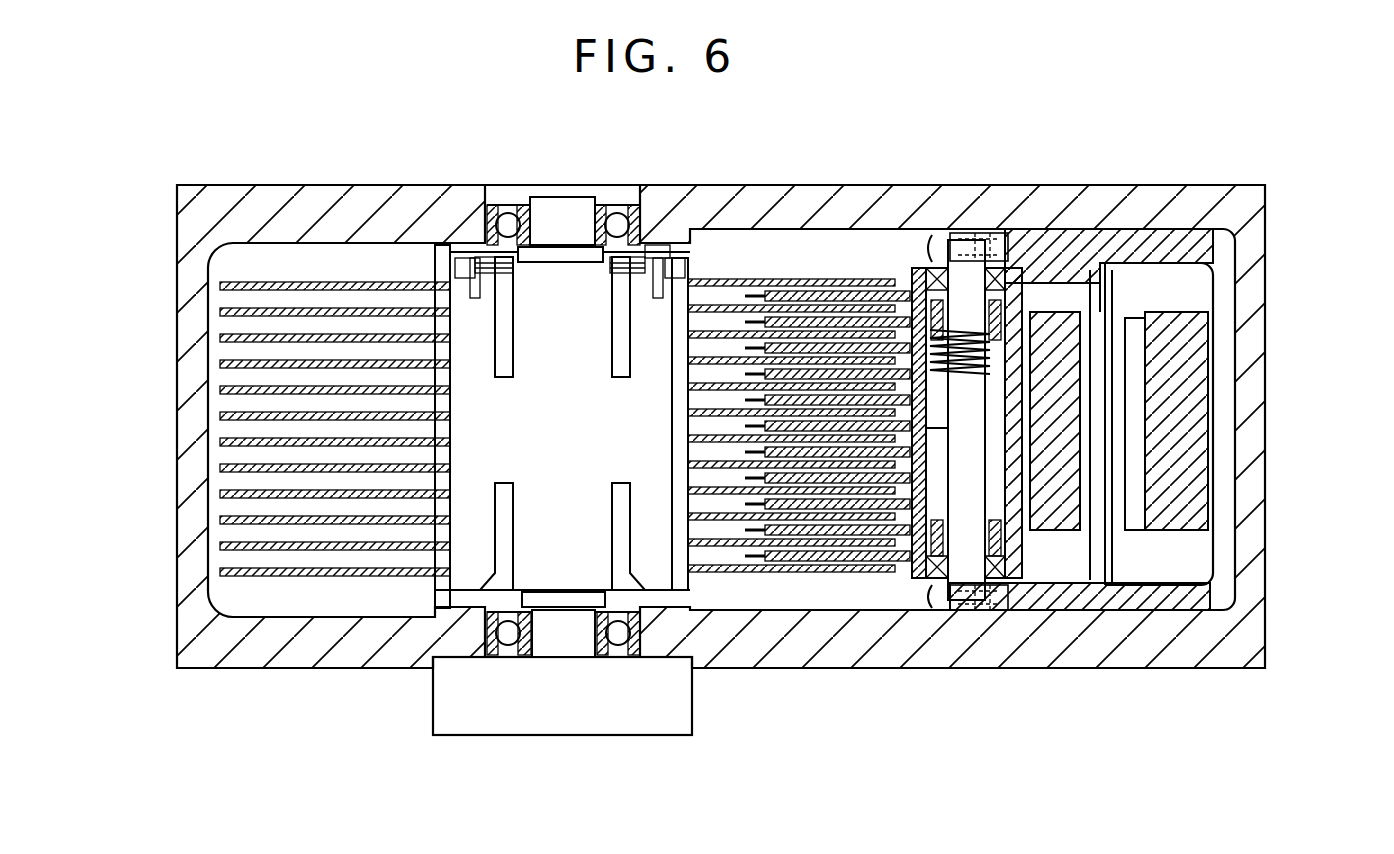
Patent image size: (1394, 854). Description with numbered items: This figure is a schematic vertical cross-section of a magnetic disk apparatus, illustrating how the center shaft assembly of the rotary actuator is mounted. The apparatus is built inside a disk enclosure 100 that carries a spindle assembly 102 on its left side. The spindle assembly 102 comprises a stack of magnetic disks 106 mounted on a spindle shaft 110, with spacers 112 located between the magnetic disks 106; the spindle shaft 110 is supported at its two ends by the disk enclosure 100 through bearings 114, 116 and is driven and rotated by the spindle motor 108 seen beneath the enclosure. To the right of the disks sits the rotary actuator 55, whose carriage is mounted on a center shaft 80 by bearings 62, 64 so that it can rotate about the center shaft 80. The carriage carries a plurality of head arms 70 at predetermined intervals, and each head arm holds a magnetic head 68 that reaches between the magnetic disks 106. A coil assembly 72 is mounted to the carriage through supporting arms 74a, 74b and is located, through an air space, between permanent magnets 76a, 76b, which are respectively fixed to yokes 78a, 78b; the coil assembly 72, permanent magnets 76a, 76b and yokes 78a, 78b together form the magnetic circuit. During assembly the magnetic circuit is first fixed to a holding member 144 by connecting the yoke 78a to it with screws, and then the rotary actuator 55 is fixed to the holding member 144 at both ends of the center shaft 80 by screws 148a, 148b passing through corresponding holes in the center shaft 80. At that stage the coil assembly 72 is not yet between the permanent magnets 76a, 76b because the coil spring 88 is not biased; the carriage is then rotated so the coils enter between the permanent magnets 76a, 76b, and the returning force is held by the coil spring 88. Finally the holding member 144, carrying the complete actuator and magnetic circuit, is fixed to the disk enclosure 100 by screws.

The disk enclosure 100 is at (287, 197).
The spindle assembly 102 is at (383, 580).
The magnetic disks 106 is at (272, 578).
The spindle motor 108 is at (668, 712).
The spindle shaft 110 is at (580, 283).
The spacers 112 is at (440, 353).
The bearing 114 is at (497, 197).
The bearing 116 is at (493, 660).
The magnetic heads 68 is at (767, 285).
The head arms 70 is at (877, 317).
The rotary actuator 55 is at (890, 583).
The screw 148a is at (942, 250).
The screw 148b is at (932, 612).
The bearing 62 is at (990, 250).
The bearing 64 is at (1000, 600).
The center shaft 80 is at (968, 575).
The coil spring 88 is at (1000, 345).
The supporting arm 74a is at (1097, 270).
The supporting arm 74b is at (1110, 590).
The permanent magnet 76a is at (1117, 590).
The permanent magnet 76b is at (1085, 545).
The coil assembly 72 is at (1133, 525).
The yoke 78a is at (1185, 312).
The yoke 78b is at (1057, 313).
The holding member 144 is at (1207, 247).